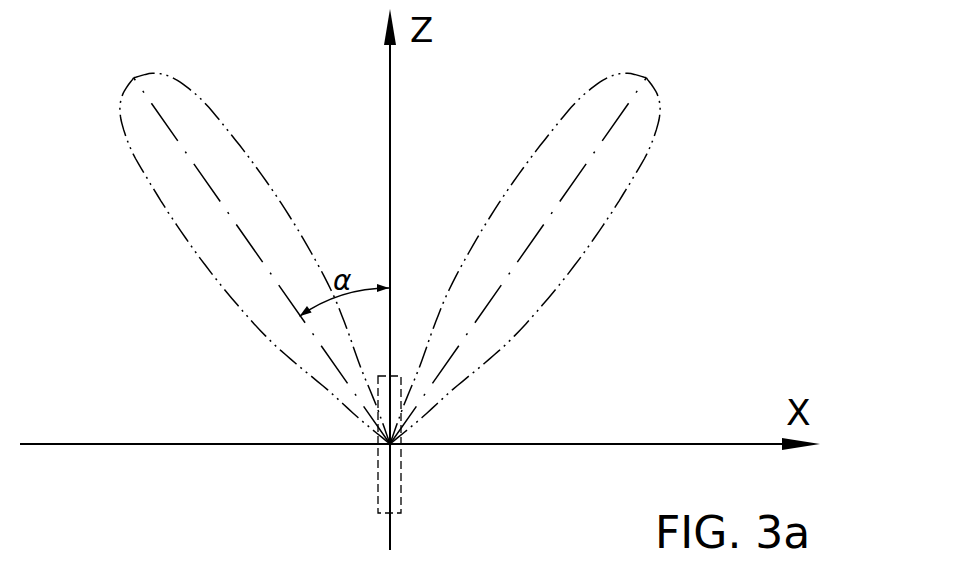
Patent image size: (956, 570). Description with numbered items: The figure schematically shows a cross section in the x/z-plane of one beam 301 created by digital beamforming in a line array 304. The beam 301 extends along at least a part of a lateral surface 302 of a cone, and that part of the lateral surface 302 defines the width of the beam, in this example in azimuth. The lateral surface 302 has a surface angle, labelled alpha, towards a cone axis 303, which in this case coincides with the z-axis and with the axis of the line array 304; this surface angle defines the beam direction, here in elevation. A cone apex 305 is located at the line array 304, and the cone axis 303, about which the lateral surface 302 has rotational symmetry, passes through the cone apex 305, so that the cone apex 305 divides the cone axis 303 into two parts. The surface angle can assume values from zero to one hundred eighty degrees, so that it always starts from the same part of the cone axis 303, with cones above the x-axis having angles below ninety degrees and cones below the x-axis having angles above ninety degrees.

The beam 301 is at (217, 120).
The lateral surface 302 is at (257, 258).
The cone axis 303 is at (390, 126).
The line array 304 is at (402, 480).
The cone apex 305 is at (383, 446).